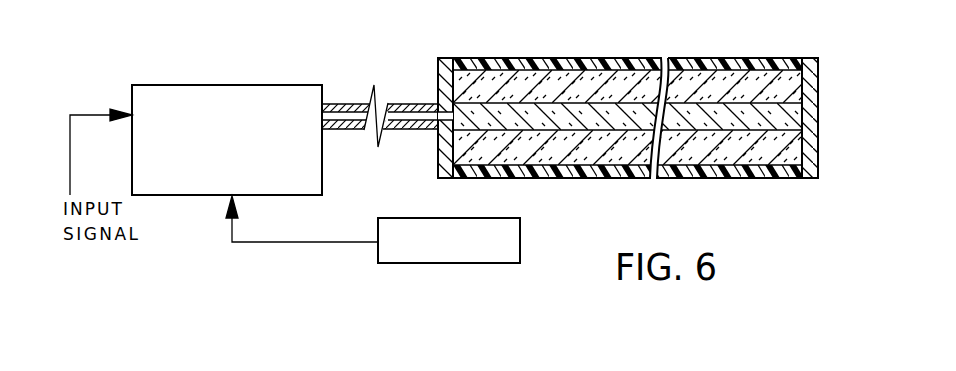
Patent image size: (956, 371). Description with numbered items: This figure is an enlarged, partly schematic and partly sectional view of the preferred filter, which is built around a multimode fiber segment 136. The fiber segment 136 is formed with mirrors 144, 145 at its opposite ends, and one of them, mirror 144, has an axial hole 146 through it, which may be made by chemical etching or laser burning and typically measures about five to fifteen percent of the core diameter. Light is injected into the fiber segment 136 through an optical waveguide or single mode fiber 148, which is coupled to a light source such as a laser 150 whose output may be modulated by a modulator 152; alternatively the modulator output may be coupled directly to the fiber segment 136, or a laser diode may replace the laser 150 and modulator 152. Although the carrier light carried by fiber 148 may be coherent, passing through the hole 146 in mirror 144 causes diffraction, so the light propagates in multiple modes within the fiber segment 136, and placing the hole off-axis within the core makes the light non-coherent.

The fiber segment 136 is at (608, 90).
The mirror 144 is at (437, 70).
The mirror 145 is at (819, 72).
The axial hole 146 is at (442, 127).
The single mode fiber 148 is at (345, 103).
The laser 150 is at (520, 233).
The modulator 152 is at (223, 83).